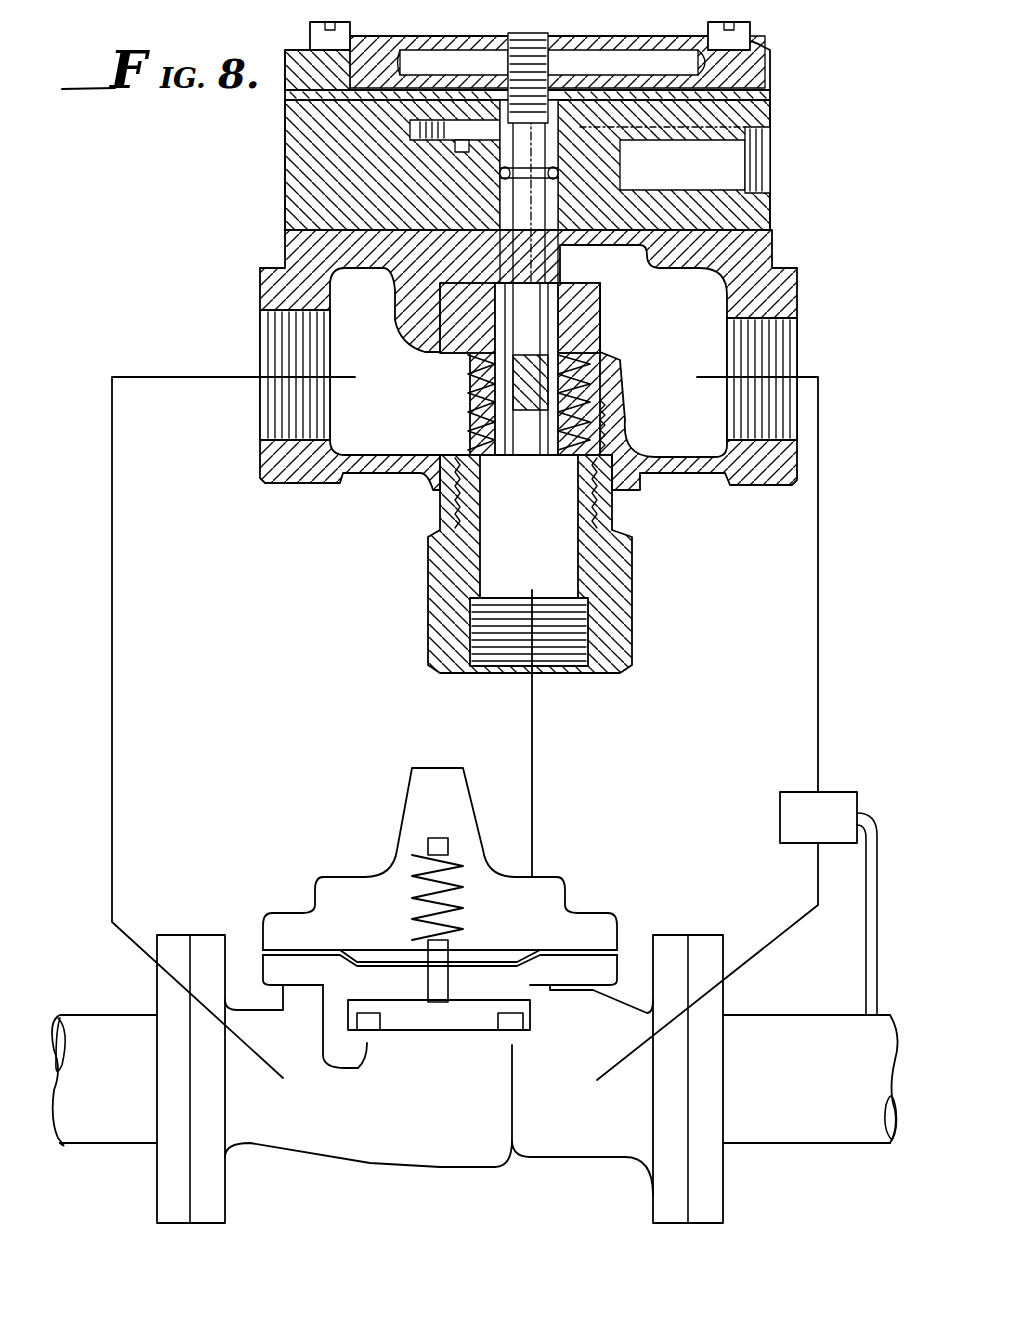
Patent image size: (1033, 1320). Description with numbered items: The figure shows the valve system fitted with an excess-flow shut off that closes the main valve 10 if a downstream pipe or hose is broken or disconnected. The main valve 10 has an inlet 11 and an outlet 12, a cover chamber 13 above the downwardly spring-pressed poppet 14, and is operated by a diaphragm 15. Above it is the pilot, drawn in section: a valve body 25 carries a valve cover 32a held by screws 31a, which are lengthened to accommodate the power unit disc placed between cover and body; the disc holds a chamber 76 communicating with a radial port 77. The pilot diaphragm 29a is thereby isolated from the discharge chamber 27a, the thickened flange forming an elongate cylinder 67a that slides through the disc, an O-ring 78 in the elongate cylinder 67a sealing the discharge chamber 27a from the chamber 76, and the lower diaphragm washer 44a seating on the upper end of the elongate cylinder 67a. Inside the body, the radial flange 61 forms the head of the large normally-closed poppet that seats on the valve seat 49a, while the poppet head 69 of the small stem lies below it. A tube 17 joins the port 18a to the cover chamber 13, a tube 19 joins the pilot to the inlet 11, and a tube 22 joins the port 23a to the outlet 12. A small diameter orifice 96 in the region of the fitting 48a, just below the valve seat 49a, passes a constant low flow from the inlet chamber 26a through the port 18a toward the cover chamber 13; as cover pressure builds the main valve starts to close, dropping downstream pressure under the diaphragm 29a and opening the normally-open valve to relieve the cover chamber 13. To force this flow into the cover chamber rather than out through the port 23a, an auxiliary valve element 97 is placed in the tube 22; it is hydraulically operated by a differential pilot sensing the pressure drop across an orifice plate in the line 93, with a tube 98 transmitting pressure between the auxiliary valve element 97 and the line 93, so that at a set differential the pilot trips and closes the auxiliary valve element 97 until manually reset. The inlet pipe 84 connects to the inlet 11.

The main valve 10 is at (475, 1004).
The inlet 11 is at (195, 1085).
The outlet 12 is at (683, 1095).
The cover chamber 13 is at (350, 885).
The poppet 14 is at (448, 1032).
The diaphragm 15 is at (494, 950).
The tube 17 is at (534, 775).
The port 18a is at (566, 660).
The tube 19 is at (114, 722).
The tube 22 is at (820, 660).
The port 23a is at (790, 342).
The valve body 25 is at (295, 492).
The inlet chamber 26a is at (366, 348).
The discharge chamber 27a is at (666, 298).
The diaphragm 29a is at (292, 112).
The screws 31a is at (312, 28).
The valve cover 32a is at (770, 78).
The lower diaphragm washer 44a is at (468, 152).
The fitting 48a is at (630, 600).
The valve seat 49a is at (628, 434).
The radial flange 61 is at (556, 503).
The elongate cylinder 67a is at (558, 258).
The poppet head 69 is at (466, 428).
The chamber 76 is at (410, 130).
The radial port 77 is at (690, 175).
The O-ring 78 is at (500, 173).
The inlet pipe 84 is at (82, 1145).
The line 93 is at (842, 1145).
The orifice 96 is at (462, 452).
The auxiliary valve element 97 is at (818, 817).
The tube 98 is at (865, 960).